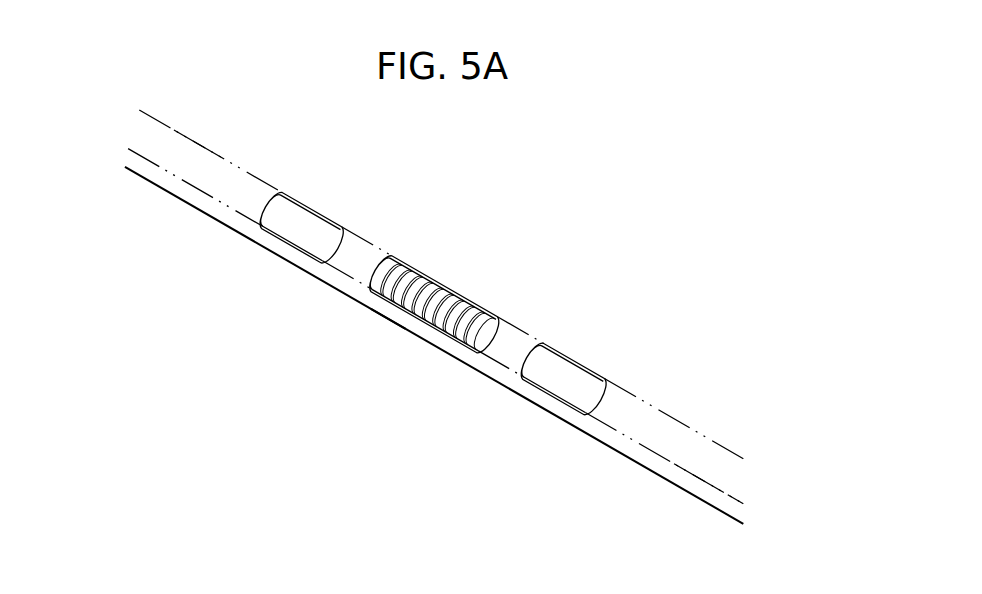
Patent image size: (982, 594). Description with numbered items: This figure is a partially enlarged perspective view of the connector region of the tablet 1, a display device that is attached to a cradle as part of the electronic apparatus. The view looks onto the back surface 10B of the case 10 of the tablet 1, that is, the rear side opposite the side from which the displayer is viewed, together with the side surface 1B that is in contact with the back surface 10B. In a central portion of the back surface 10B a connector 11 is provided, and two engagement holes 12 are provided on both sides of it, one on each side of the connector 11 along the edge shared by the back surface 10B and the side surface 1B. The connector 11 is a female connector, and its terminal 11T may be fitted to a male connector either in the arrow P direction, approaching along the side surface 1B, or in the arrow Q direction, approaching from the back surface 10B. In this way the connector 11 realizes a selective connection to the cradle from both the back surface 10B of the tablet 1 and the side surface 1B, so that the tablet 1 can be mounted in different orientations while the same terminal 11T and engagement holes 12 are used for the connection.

The tablet 1 is at (247, 254).
The side surface 1B is at (188, 163).
The case 10 is at (660, 228).
The back surface 10B is at (703, 398).
The connector 11 is at (457, 321).
The terminal 11T is at (462, 306).
The engagement holes 12 is at (302, 220).
The arrow P direction P is at (408, 323).
The arrow Q direction Q is at (447, 265).